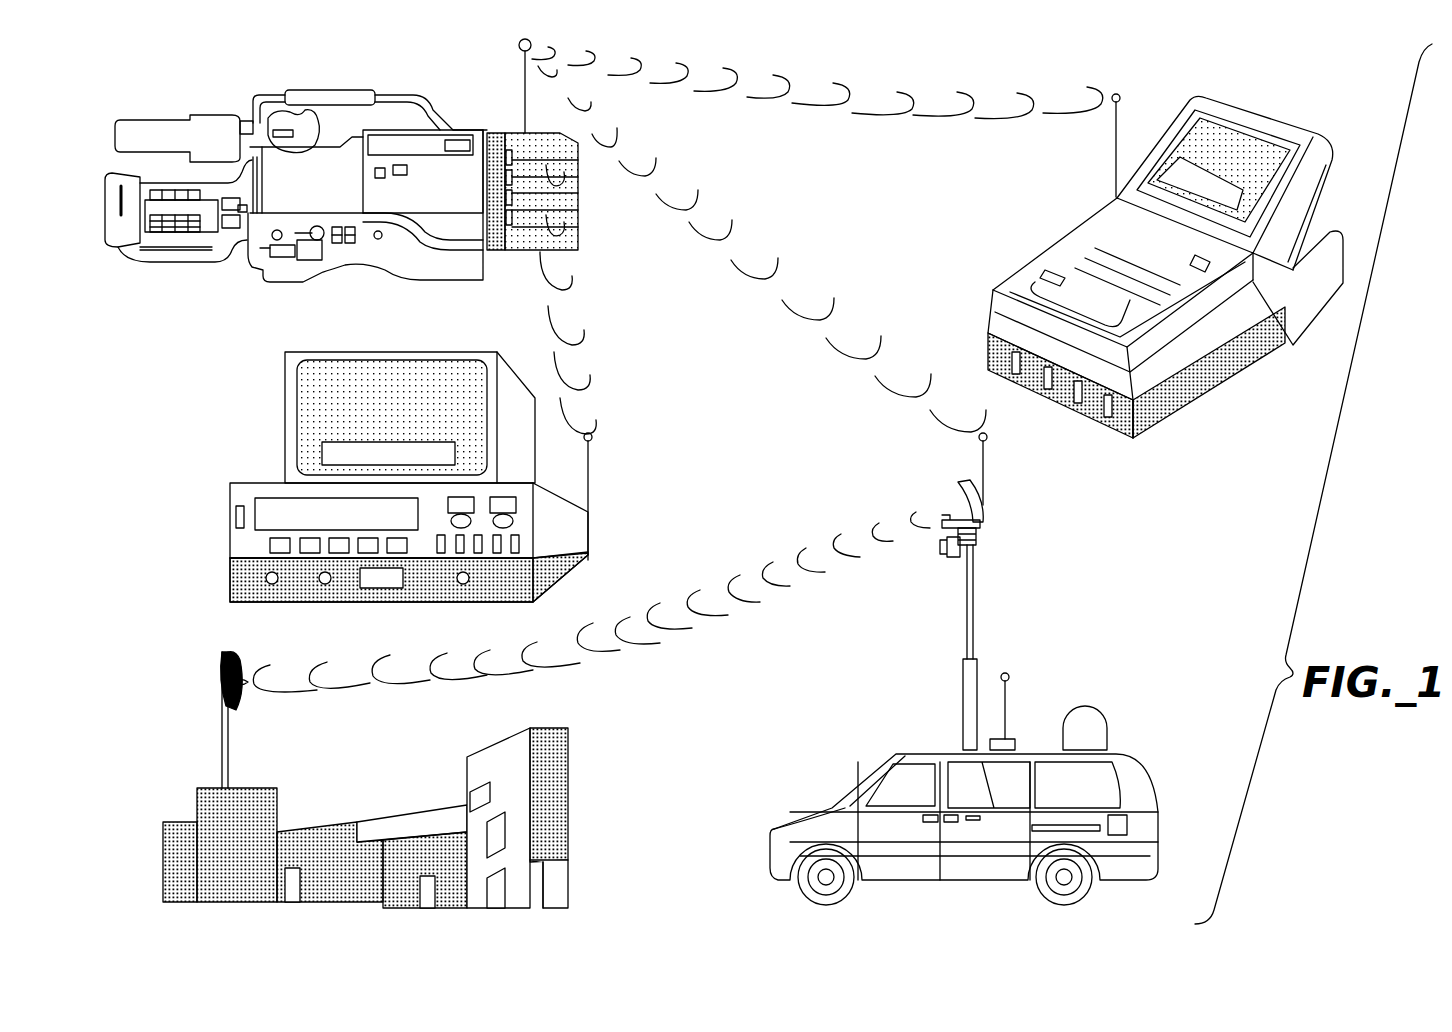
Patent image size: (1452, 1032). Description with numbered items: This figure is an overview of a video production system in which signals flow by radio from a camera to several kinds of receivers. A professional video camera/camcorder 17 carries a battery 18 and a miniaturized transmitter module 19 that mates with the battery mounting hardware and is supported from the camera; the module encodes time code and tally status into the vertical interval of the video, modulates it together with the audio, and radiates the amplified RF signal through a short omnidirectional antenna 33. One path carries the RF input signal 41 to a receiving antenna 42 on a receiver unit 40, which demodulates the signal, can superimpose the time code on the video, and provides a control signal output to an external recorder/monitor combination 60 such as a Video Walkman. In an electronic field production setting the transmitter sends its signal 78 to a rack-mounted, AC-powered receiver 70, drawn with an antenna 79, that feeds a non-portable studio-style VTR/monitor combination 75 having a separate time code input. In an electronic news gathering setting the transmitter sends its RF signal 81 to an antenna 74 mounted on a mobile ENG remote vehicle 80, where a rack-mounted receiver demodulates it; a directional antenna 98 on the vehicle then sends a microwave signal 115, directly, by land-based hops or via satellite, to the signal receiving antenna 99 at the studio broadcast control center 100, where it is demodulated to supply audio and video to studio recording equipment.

The video camera/camcorder 17 is at (338, 162).
The battery 18 is at (565, 255).
The miniaturized transmitter module 19 is at (500, 132).
The omnidirectional antenna 33 is at (515, 46).
The receiver unit 40 is at (1215, 398).
The RF input signal 41 is at (808, 108).
The receiving antenna 42 is at (1122, 92).
The external recorder/monitor combination 60 is at (1318, 207).
The receiver 70 is at (325, 605).
The antenna 74 is at (986, 456).
The VTR/monitor combination 75 is at (250, 430).
The signal 78 is at (600, 376).
The recorder antenna 79 is at (589, 528).
The mobile ENG remote vehicle 80 is at (806, 803).
The RF signal 81 is at (826, 350).
The directional antenna 98 is at (985, 528).
The signal receiving antenna 99 is at (252, 702).
The studio broadcast control center 100 is at (572, 750).
The signal 115 is at (876, 522).